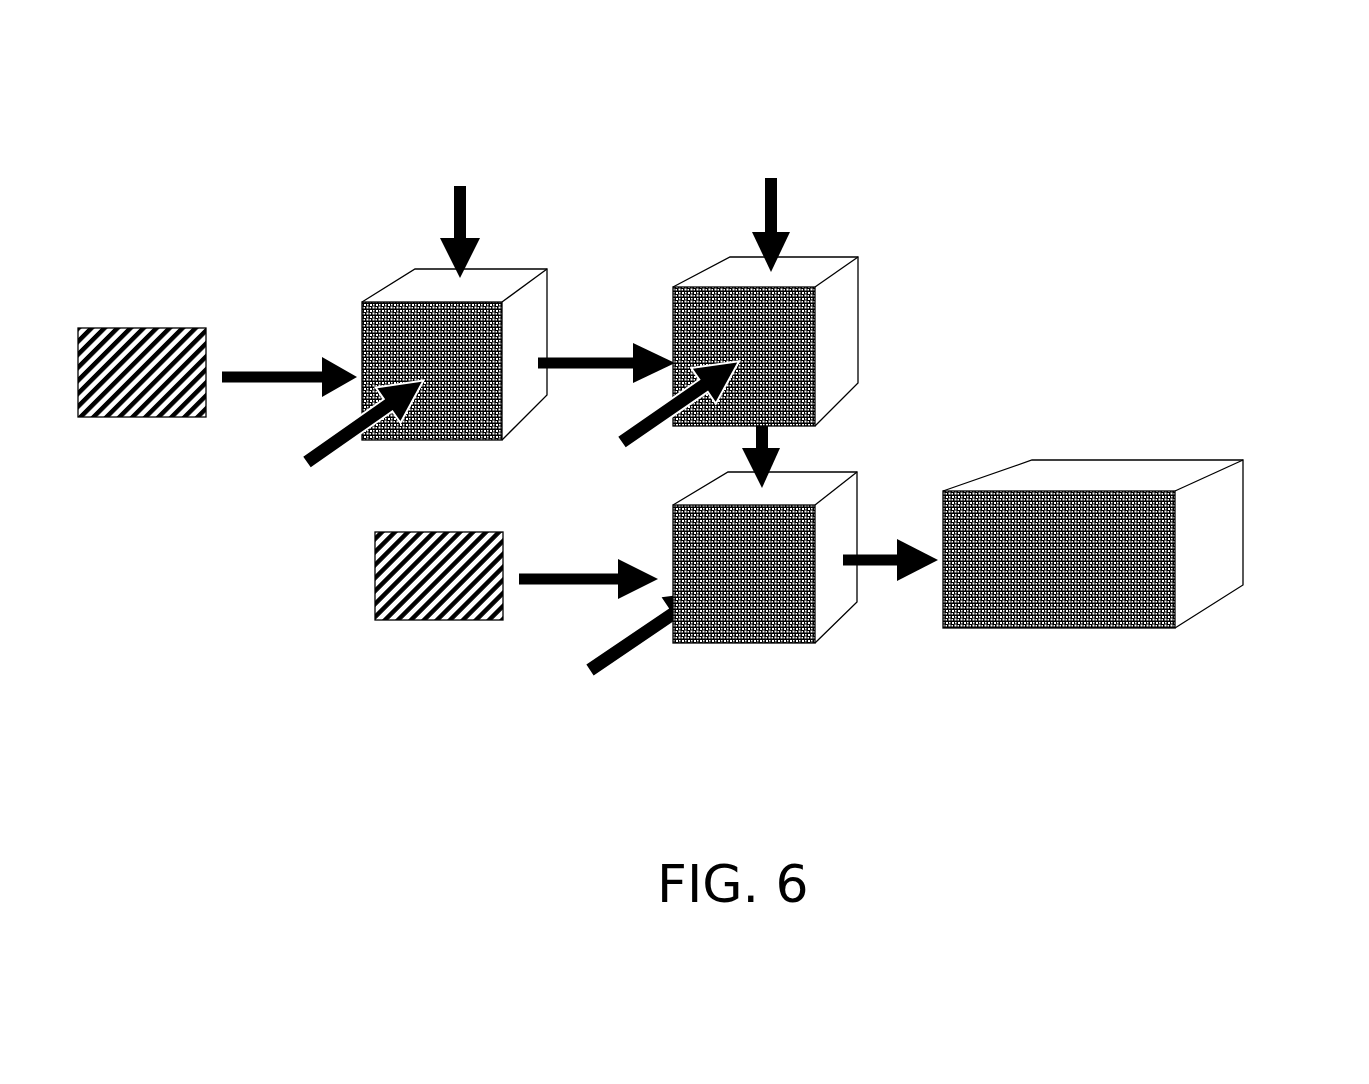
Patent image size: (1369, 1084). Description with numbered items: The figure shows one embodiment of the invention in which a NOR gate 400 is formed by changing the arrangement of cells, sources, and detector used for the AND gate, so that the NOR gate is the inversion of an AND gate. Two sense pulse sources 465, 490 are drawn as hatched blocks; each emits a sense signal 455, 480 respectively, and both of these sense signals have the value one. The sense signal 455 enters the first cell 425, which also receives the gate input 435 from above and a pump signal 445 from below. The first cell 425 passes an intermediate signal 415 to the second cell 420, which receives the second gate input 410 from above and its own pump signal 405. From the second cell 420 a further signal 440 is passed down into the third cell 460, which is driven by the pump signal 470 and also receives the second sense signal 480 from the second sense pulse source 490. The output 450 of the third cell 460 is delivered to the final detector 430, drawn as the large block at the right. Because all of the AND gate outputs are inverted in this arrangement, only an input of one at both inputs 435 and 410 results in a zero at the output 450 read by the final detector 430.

The NOR gate 400 is at (965, 148).
The sense pulse source 465 is at (107, 343).
The sense signal 455 is at (230, 384).
The input 435 is at (453, 217).
The first cell 425 is at (475, 329).
The pump signal 445 is at (307, 458).
The intermediate signal 415 is at (588, 355).
The input 410 is at (787, 242).
The second cell 420 is at (830, 345).
The pump signal 405 is at (643, 447).
The intermediate signal 440 is at (782, 457).
The sense pulse source 490 is at (405, 590).
The sense signal 480 is at (548, 587).
The pump signal 470 is at (603, 670).
The third cell 460 is at (758, 620).
The output 450 is at (883, 568).
The final detector 430 is at (1212, 530).